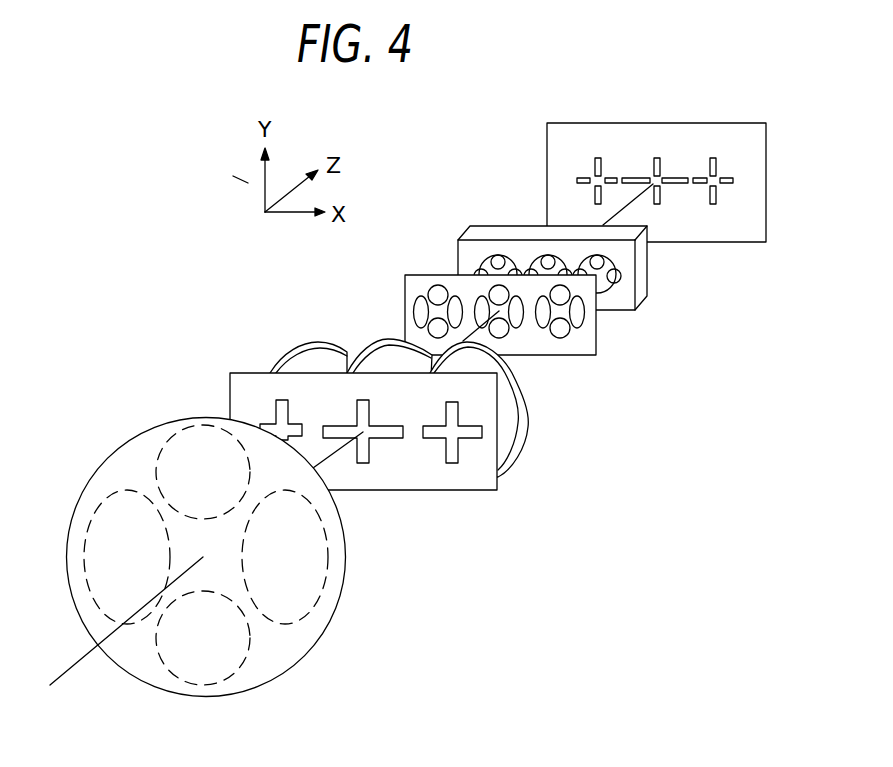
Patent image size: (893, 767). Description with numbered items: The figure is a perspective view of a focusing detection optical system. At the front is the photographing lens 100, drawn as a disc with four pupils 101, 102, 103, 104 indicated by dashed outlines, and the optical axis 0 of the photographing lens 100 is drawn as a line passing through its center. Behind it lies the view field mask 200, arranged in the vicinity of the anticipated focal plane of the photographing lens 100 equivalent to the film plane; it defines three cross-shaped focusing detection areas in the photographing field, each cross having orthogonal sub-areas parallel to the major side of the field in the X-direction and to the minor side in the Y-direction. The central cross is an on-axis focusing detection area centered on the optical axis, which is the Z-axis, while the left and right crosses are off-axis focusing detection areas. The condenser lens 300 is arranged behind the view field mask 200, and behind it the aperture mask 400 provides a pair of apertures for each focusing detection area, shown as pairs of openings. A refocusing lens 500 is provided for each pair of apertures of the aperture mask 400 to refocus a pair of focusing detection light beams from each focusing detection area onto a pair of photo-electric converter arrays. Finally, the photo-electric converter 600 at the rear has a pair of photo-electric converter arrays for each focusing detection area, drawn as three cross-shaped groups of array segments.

The optical axis 0 is at (72, 666).
The photographing lens 100 is at (329, 611).
The pupil 101 is at (285, 557).
The pupil 102 is at (127, 557).
The pupil 103 is at (203, 638).
The pupil 104 is at (203, 472).
The view field mask 200 is at (455, 492).
The condenser lens 300 is at (526, 432).
The aperture mask 400 is at (597, 331).
The refocusing lens 500 is at (647, 272).
The photo-electric converter 600 is at (767, 209).